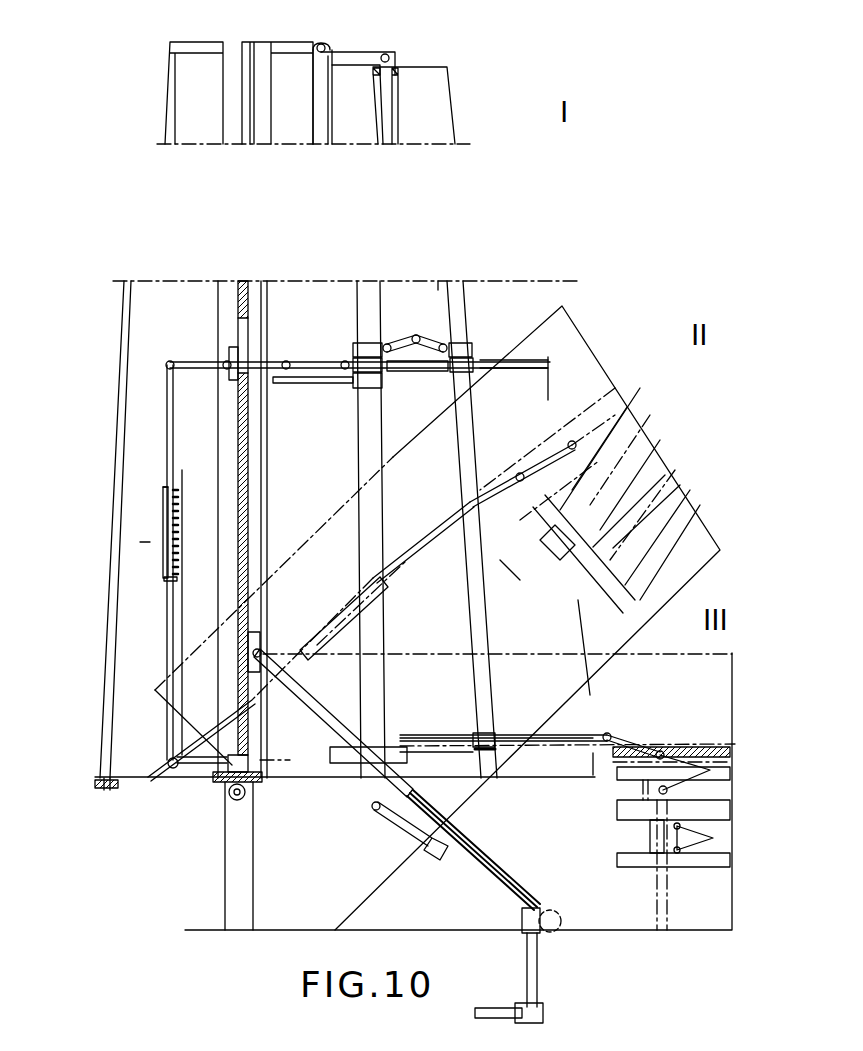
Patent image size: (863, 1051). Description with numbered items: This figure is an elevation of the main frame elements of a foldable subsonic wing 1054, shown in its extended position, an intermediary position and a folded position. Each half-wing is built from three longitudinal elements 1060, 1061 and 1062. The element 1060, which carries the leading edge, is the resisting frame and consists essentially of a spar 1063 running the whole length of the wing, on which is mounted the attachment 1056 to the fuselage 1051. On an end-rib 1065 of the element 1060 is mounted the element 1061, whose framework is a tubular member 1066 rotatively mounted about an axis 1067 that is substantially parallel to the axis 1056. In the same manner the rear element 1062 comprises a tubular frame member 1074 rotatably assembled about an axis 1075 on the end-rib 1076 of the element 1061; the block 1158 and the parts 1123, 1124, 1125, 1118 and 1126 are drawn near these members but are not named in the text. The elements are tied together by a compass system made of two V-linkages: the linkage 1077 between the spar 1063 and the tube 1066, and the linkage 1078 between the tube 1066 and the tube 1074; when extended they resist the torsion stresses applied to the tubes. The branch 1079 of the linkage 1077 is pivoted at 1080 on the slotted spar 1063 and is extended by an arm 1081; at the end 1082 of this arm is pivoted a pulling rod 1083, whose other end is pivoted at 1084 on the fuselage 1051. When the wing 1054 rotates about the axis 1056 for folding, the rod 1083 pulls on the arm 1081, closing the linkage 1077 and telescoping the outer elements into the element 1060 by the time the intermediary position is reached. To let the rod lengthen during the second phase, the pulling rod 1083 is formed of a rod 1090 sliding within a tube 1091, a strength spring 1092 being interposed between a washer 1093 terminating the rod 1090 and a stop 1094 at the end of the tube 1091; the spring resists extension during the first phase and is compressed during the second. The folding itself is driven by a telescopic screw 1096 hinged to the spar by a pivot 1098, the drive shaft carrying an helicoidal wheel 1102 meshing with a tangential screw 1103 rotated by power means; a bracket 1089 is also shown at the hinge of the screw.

The end-rib 1065 is at (239, 74).
The axis 1067 is at (327, 27).
The tubular member 1066 is at (556, 431).
The end-rib 1076 is at (379, 42).
The axis 1075 is at (429, 90).
The block 1158 is at (455, 105).
The longitudinal element 1060 is at (308, 301).
The longitudinal element 1061 is at (397, 529).
The rear element 1062 is at (505, 292).
The tubular frame member 1074 is at (624, 556).
The frame line 1123 is at (423, 262).
The spar 1063 is at (445, 510).
The pivot 1080 is at (185, 335).
The arm 1081 is at (419, 559).
The V-linkage 1077 is at (315, 347).
The end of arm 1082 is at (110, 368).
The rod 1090 is at (326, 573).
The stop 1094 is at (101, 470).
The strength spring 1092 is at (109, 532).
The pulling rod 1083 is at (391, 651).
The washer 1093 is at (109, 592).
The tube 1091 is at (107, 633).
The pivot 1084 is at (199, 749).
The fuselage 1051 is at (112, 804).
The attachment 1056 is at (203, 851).
The cylinder pivot 1089 is at (320, 461).
The V-linkage 1078 is at (559, 577).
The clamp blocks 1124 is at (492, 331).
The branch 1079 is at (510, 464).
The bar 1125 is at (416, 388).
The rod 1118 is at (348, 405).
The wing 1054 is at (513, 385).
The stop 1126 is at (593, 343).
The telescopic screw 1096 is at (397, 779).
The pivot 1098 is at (369, 827).
The tangential screw 1103 is at (495, 963).
The helicoidal wheel 1102 is at (582, 910).